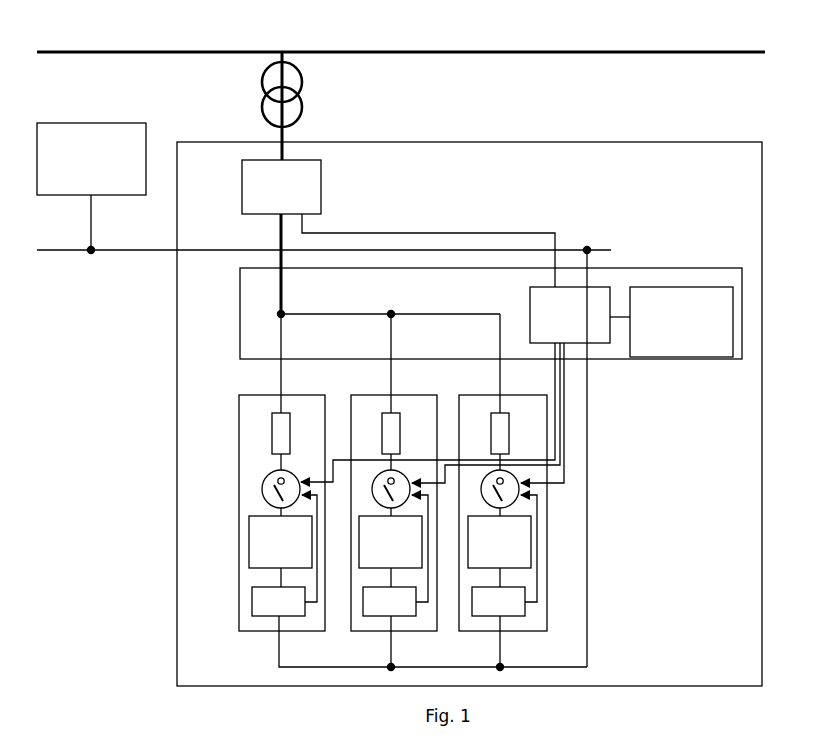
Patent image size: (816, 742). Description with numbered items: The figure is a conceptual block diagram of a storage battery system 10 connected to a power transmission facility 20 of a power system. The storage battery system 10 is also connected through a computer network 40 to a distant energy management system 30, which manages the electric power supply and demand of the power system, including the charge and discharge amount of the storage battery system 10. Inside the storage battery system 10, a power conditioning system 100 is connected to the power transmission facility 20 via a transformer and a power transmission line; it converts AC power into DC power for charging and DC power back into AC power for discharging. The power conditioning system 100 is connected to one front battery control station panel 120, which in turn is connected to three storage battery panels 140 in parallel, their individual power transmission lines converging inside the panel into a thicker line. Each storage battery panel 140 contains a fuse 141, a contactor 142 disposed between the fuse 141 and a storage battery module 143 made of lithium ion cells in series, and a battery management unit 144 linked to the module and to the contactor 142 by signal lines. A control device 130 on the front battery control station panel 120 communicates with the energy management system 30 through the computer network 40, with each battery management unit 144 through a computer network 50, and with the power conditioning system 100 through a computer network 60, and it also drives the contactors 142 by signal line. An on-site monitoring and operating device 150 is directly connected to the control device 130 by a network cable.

The storage battery system 10 is at (445, 142).
The power transmission facility 20 is at (172, 50).
The energy management system (EMS) 30 is at (93, 123).
The computer network 40 is at (135, 250).
The computer network 50 is at (553, 667).
The computer network 60 is at (418, 233).
The power conditioning system (PCS) 100 is at (321, 181).
The front battery control station panel (FBCS panel) 120 is at (240, 312).
The control device 130 is at (593, 287).
The storage battery panel 140 is at (250, 395).
The fuse 141 is at (272, 436).
The contactor 142 is at (262, 489).
The storage battery module 143 is at (249, 533).
The battery management unit (BMU) 144 is at (252, 600).
The on-site monitoring and operating device 150 is at (677, 287).